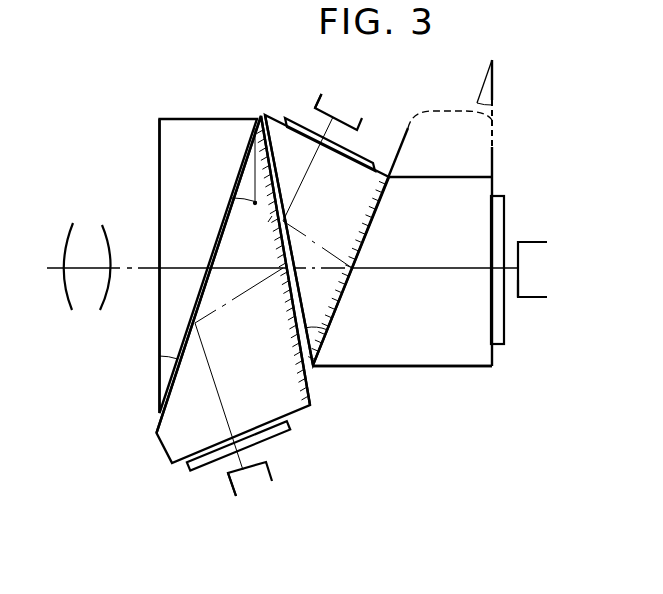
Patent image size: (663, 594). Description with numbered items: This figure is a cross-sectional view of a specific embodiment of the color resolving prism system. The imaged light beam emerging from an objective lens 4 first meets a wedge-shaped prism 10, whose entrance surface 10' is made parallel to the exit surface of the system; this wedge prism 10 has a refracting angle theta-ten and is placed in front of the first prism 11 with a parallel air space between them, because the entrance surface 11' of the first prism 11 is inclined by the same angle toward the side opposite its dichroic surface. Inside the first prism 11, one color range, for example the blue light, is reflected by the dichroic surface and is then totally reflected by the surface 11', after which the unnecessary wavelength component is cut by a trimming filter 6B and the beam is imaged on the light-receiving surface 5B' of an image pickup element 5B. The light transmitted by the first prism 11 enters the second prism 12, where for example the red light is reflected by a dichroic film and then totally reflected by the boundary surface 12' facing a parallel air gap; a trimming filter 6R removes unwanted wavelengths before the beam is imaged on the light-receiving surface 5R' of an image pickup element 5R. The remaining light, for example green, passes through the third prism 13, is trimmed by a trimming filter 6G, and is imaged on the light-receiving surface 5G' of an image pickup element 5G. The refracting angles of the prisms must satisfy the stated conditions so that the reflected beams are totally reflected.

The objective lens 4 is at (91, 242).
The wedge-shaped prism 10 is at (193, 266).
The entrance surface of wedge-shaped prism 10' is at (131, 266).
The first prism 11 is at (214, 295).
The entrance surface of first prism 11' is at (209, 274).
The second prism 12 is at (327, 237).
The boundary surface of second prism 12' is at (358, 246).
The third prism 13 is at (430, 213).
The red image pickup element 5R is at (338, 109).
The light-receiving surface of red image pickup element 5R' is at (302, 83).
The blue image pickup element 5B is at (250, 483).
The light-receiving surface of blue image pickup element 5B' is at (212, 487).
The green image pickup element 5G is at (537, 269).
The light-receiving surface of green image pickup element 5G' is at (535, 310).
The red trimming filter 6R is at (283, 119).
The blue trimming filter 6B is at (288, 429).
The green trimming filter 6G is at (497, 213).